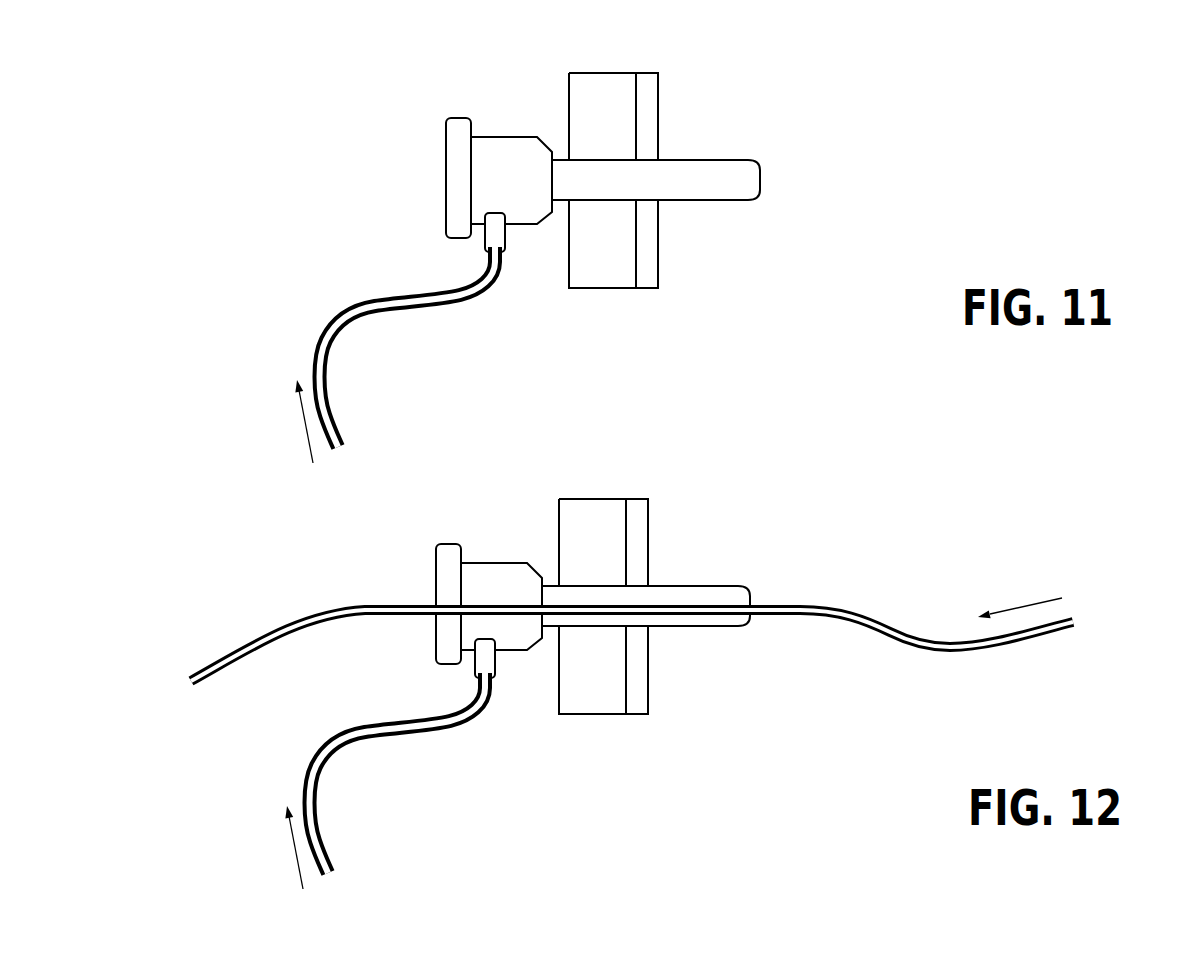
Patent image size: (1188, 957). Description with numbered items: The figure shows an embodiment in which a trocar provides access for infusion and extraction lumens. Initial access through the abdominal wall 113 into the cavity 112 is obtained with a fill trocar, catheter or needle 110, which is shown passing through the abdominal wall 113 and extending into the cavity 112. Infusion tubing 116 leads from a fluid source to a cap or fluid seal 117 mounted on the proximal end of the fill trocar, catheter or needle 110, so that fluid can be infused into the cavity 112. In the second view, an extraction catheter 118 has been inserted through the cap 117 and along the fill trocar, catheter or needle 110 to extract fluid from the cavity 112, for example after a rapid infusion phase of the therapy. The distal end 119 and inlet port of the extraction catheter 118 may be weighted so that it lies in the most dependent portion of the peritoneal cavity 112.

In FIG. 11, the fill trocar, catheter or needle 110 is at (702, 177).
In FIG. 11, the cavity 112 is at (786, 248).
In FIG. 12, the cavity 112 is at (759, 664).
In FIG. 11, the abdominal wall 113 is at (616, 72).
In FIG. 12, the abdominal wall 113 is at (621, 586).
In FIG. 11, the infusion tubing 116 is at (348, 302).
In FIG. 12, the infusion tubing 116 is at (398, 773).
In FIG. 11, the cap or fluid seal 117 is at (500, 152).
In FIG. 12, the cap or fluid seal 117 is at (489, 588).
In FIG. 12, the extraction catheter 118 is at (892, 627).
In FIG. 12, the distal end 119 is at (1070, 630).